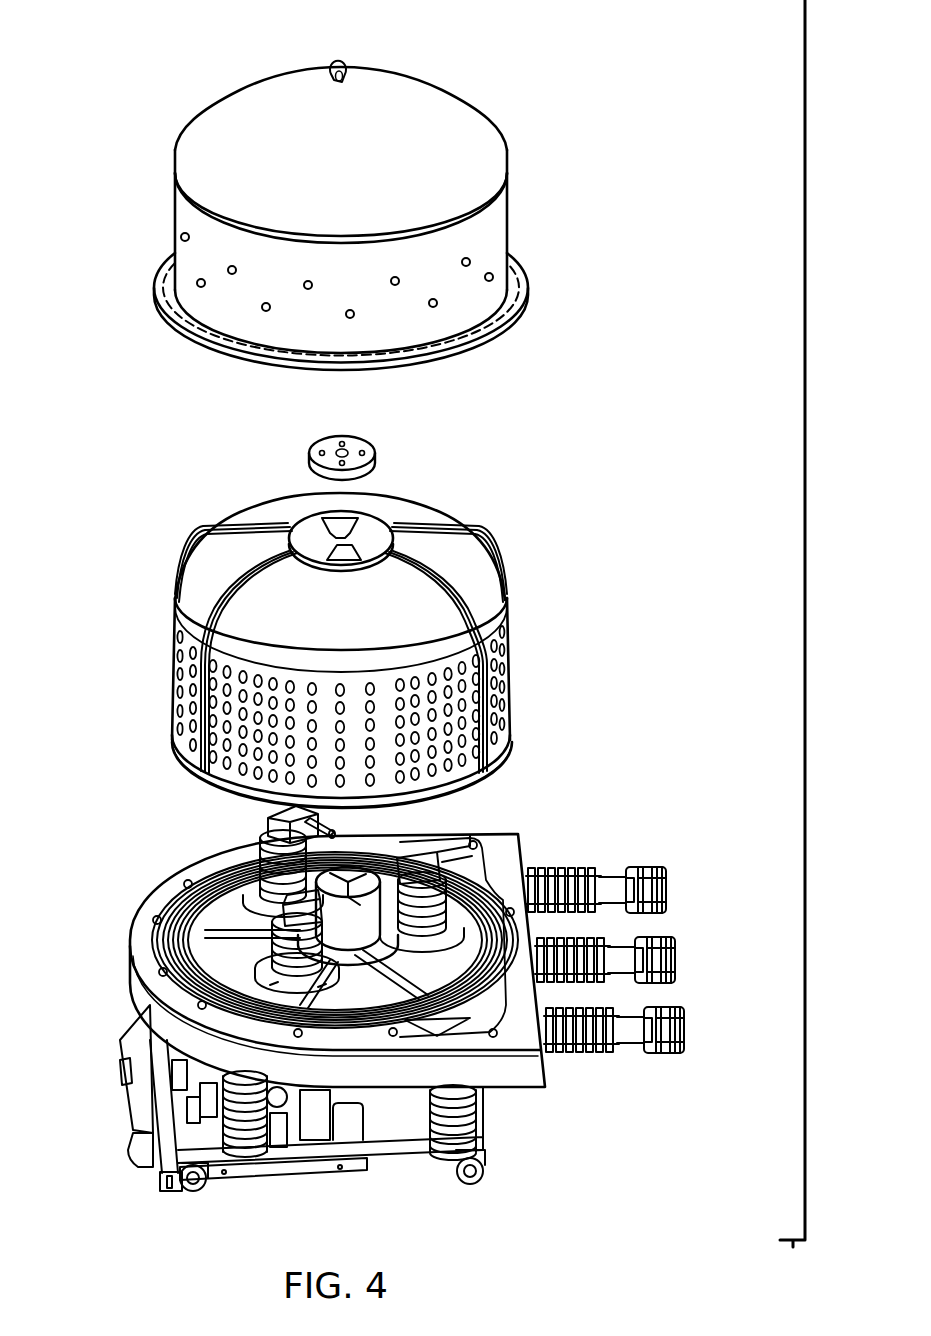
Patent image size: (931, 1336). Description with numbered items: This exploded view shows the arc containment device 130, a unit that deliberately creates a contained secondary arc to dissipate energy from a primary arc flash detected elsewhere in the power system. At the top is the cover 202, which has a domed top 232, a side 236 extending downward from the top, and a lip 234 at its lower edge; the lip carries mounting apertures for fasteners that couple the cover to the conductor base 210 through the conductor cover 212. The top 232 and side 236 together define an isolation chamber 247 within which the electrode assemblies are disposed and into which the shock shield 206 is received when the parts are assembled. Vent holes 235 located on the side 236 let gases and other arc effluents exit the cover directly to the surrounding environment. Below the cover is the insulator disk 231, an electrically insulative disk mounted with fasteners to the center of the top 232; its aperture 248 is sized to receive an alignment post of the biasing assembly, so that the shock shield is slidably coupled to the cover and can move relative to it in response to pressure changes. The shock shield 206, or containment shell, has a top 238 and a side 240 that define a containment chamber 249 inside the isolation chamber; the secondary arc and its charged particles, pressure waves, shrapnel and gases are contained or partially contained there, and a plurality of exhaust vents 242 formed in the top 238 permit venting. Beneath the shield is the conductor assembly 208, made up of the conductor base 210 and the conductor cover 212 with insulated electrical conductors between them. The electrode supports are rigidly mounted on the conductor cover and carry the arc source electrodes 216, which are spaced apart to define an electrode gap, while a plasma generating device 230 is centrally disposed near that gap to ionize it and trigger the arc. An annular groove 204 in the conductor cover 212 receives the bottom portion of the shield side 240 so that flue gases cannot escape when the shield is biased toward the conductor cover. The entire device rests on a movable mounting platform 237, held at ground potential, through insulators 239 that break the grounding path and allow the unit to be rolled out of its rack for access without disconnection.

The arc containment device 130 is at (162, 471).
The cover 202 is at (507, 171).
The top 232 is at (382, 95).
The side 236 is at (489, 237).
The lip 234 is at (520, 297).
The vent holes 235 is at (346, 321).
The isolation chamber 247 is at (484, 362).
The insulator disk 231 is at (312, 447).
The aperture 248 is at (345, 445).
The shock shield 206 is at (460, 548).
The top 238 is at (408, 538).
The exhaust vents 242 is at (345, 562).
The side 240 is at (507, 688).
The containment chamber 249 is at (487, 779).
The arc source electrode 216 is at (367, 845).
The plasma generating device 230 is at (195, 850).
The conductor cover 212 is at (505, 858).
The conductor assembly 208 is at (688, 858).
The conductor base 210 is at (527, 1075).
The annular groove 204 is at (170, 995).
The insulators 239 is at (236, 1160).
The movable mounting platform 237 is at (280, 1182).